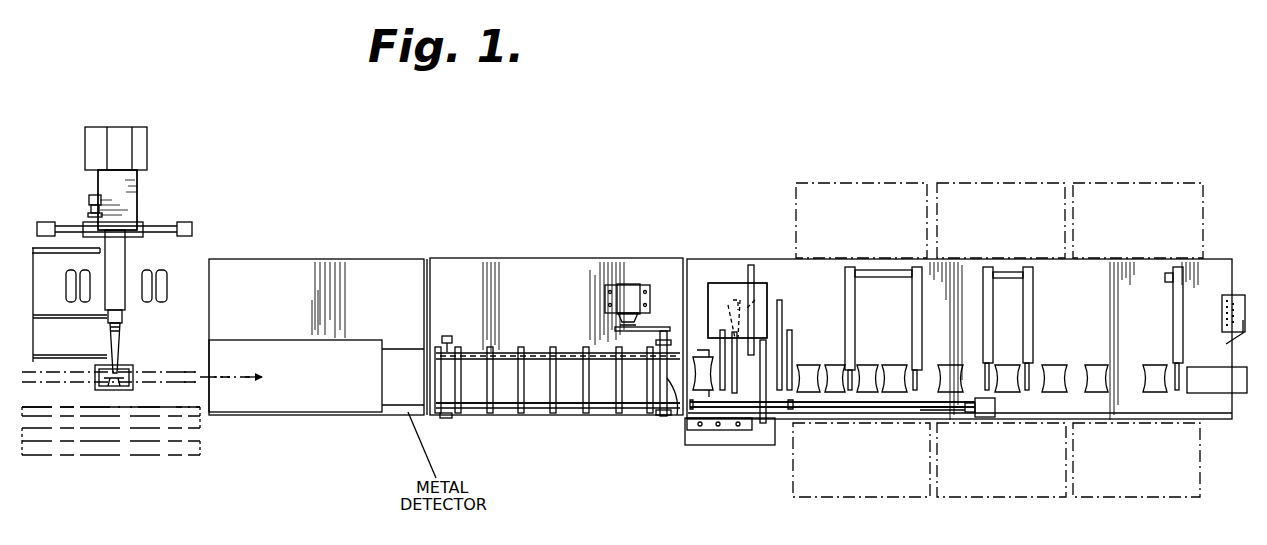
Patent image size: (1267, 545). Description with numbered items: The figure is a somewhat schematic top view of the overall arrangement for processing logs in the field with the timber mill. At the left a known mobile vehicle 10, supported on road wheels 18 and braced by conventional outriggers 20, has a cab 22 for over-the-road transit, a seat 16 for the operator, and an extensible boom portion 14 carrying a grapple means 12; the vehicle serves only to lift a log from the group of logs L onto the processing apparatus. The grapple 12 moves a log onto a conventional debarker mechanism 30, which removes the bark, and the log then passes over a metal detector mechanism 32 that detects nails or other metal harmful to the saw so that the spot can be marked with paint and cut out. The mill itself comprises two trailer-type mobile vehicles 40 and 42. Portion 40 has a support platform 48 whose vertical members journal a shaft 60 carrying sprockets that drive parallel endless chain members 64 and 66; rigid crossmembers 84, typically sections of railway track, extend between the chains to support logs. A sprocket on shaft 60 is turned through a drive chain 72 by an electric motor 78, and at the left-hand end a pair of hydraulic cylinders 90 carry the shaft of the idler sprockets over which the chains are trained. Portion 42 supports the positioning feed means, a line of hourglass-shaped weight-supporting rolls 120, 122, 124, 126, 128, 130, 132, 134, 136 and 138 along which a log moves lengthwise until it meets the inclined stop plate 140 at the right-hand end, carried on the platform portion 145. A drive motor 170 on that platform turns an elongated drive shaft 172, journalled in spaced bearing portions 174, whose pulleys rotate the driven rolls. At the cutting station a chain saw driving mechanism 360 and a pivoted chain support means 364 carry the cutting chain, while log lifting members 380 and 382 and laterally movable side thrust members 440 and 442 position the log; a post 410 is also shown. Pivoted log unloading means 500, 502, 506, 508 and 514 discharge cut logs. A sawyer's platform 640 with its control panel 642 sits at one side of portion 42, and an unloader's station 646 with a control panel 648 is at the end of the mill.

The mobile vehicle 10 is at (176, 200).
The grapple means 12 is at (137, 366).
The extensible boom portion 14 is at (121, 313).
The seat 16 is at (90, 200).
The road wheels 18 is at (68, 281).
The outriggers 20 is at (60, 226).
The cab 22 is at (148, 148).
The group of logs L is at (129, 456).
The debarker mechanism 30 is at (294, 398).
The metal detector mechanism 32 is at (393, 412).
The mobile vehicle 40 is at (552, 255).
The mobile vehicle 42 is at (690, 255).
The support platform 48 is at (558, 312).
The shaft 60 is at (677, 405).
The chain member 64 is at (538, 352).
The chain member 66 is at (540, 410).
The drive chain 72 is at (648, 330).
The electric motor 78 is at (632, 283).
The rigid members 84 is at (494, 362).
The hydraulic cylinders 90 is at (447, 336).
The weight-supporting roll 120 is at (696, 356).
The weight-supporting roll 122 is at (803, 362).
The weight-supporting roll 124 is at (835, 363).
The weight-supporting roll 126 is at (863, 362).
The weight-supporting roll 128 is at (892, 362).
The weight-supporting roll 130 is at (948, 362).
The weight-supporting roll 132 is at (1007, 362).
The weight-supporting roll 134 is at (1052, 362).
The weight-supporting roll 136 is at (1094, 362).
The weight-supporting roll 138 is at (1155, 362).
The stop plate 140 is at (1220, 386).
The platform portion 145 is at (1105, 307).
The drive motor 170 is at (985, 418).
The drive shaft 172 is at (918, 412).
The bearing portions 174 is at (793, 403).
The chain saw driving mechanism 360 is at (736, 280).
The chain support means 364 is at (766, 400).
The log lifting member 380 is at (757, 298).
The log lifting member 382 is at (783, 306).
The saw blade post 410 is at (757, 272).
The side thrust member 440 is at (730, 340).
The side thrust member 442 is at (790, 330).
The log unloading means 500 is at (835, 278).
The log unloading means 502 is at (907, 270).
The log unloading means 506 is at (978, 278).
The log unloading means 508 is at (1036, 276).
The log unloading means 514 is at (1166, 271).
The sawyer's platform 640 is at (733, 437).
The control panel 642 is at (690, 423).
The unloader's station 646 is at (1215, 338).
The control panel 648 is at (1222, 311).